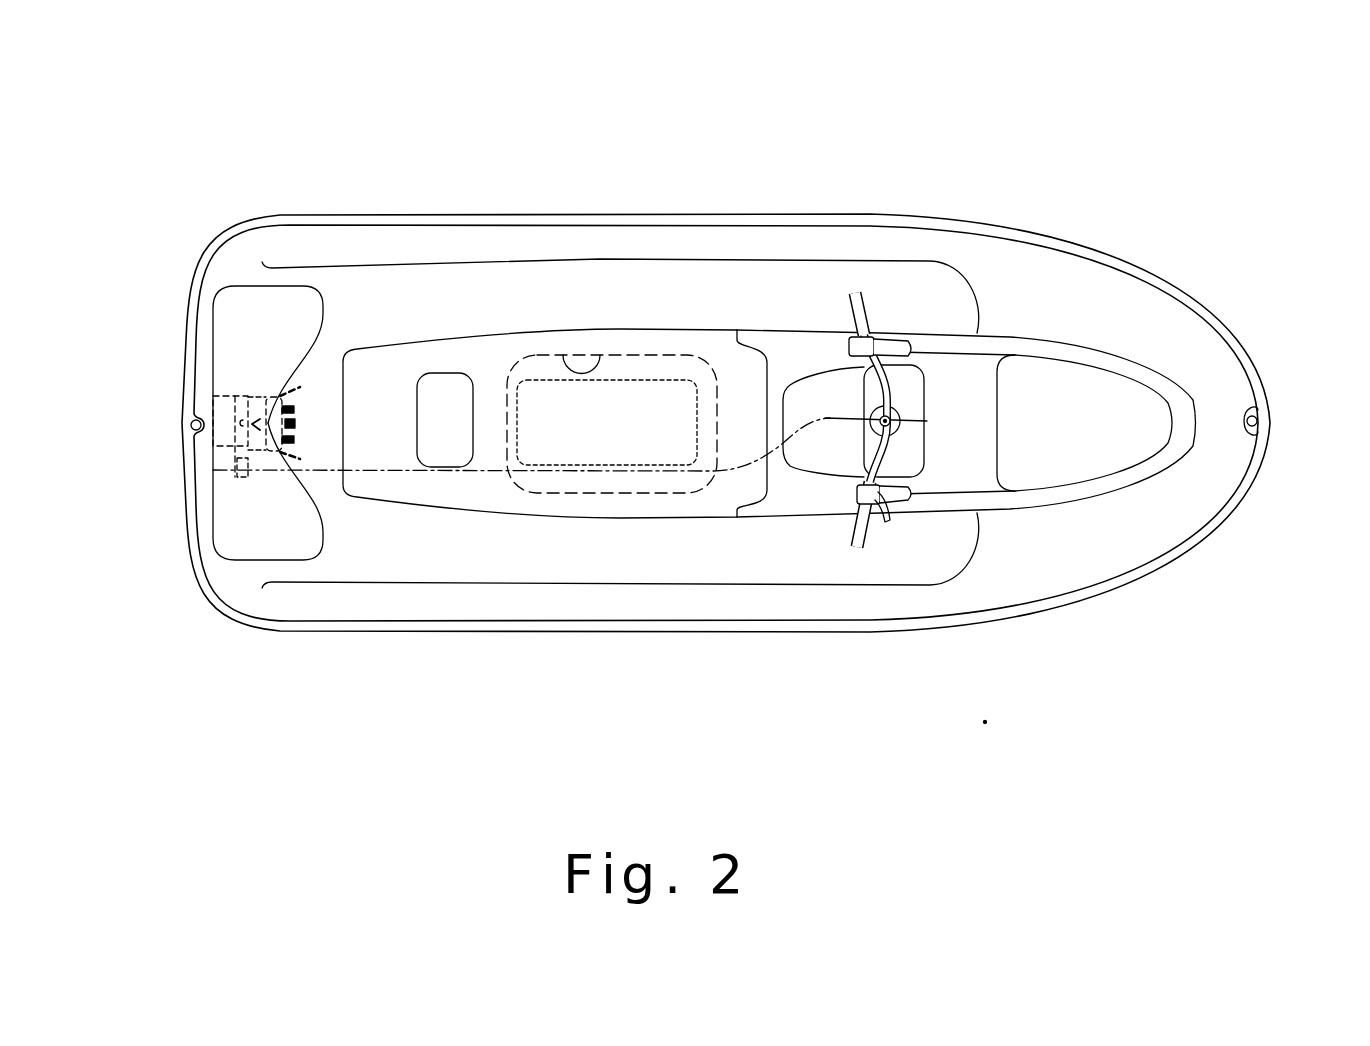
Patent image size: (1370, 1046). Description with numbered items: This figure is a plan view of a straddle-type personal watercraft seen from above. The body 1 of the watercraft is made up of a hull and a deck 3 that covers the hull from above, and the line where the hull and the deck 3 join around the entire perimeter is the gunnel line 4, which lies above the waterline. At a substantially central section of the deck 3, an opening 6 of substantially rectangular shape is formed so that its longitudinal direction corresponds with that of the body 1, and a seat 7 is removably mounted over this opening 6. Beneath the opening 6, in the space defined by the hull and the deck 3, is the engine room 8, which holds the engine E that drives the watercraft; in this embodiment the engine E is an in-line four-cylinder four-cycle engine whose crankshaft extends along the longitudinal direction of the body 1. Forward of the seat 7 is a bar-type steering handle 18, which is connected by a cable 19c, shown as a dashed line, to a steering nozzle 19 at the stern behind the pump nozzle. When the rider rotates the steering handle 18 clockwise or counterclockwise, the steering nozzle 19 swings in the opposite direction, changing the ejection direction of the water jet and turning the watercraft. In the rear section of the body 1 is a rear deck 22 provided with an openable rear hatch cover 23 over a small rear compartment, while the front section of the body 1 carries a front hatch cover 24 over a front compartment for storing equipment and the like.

The body 1 is at (1185, 330).
The deck 3 is at (1043, 292).
The gunnel line 4 is at (1258, 497).
The opening 6 is at (598, 352).
The seat 7 is at (378, 440).
The engine room 8 is at (655, 367).
The steering handle 18 is at (868, 318).
The steering nozzle 19 is at (236, 446).
The cable 19c is at (492, 470).
The rear deck 22 is at (243, 337).
The rear hatch cover 23 is at (243, 515).
The front hatch cover 24 is at (1080, 443).
The engine E is at (617, 427).